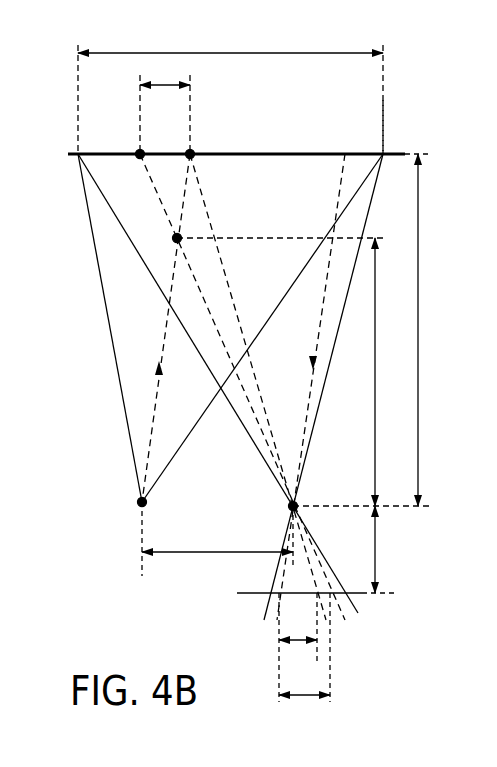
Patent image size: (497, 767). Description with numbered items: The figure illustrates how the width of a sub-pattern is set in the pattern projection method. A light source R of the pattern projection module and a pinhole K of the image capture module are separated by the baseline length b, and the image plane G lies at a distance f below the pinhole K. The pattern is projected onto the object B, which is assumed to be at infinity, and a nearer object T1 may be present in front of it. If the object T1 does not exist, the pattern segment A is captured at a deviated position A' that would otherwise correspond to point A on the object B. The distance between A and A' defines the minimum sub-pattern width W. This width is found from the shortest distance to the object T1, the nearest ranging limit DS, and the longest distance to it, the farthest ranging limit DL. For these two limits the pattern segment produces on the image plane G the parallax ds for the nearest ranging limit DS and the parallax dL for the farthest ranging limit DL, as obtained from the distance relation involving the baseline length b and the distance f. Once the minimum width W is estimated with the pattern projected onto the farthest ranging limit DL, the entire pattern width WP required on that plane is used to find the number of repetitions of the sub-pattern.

The entire pattern width WP is at (230, 91).
The minimum sub-pattern width W is at (165, 74).
The deviated position A' is at (123, 117).
The pattern segment A is at (210, 117).
The object B is at (384, 153).
The object T1 is at (180, 236).
The light source R is at (145, 504).
The pinhole K is at (296, 508).
The image plane G is at (245, 594).
The farthest ranging limit DL is at (402, 330).
The nearest ranging limit DS is at (359, 372).
The distance from pinhole to image plane f is at (381, 549).
The baseline length b is at (217, 566).
The parallax for farthest ranging limit dL is at (298, 647).
The parallax for nearest ranging limit ds is at (304, 657).